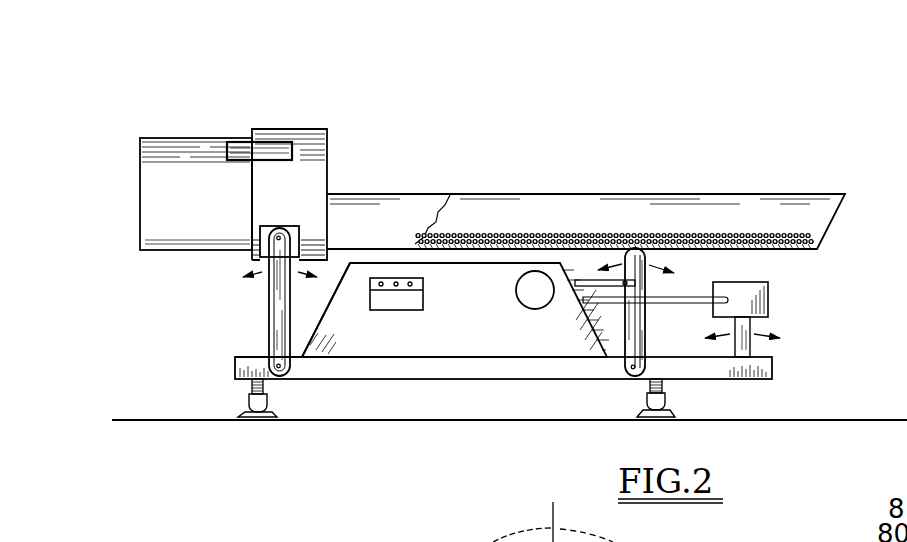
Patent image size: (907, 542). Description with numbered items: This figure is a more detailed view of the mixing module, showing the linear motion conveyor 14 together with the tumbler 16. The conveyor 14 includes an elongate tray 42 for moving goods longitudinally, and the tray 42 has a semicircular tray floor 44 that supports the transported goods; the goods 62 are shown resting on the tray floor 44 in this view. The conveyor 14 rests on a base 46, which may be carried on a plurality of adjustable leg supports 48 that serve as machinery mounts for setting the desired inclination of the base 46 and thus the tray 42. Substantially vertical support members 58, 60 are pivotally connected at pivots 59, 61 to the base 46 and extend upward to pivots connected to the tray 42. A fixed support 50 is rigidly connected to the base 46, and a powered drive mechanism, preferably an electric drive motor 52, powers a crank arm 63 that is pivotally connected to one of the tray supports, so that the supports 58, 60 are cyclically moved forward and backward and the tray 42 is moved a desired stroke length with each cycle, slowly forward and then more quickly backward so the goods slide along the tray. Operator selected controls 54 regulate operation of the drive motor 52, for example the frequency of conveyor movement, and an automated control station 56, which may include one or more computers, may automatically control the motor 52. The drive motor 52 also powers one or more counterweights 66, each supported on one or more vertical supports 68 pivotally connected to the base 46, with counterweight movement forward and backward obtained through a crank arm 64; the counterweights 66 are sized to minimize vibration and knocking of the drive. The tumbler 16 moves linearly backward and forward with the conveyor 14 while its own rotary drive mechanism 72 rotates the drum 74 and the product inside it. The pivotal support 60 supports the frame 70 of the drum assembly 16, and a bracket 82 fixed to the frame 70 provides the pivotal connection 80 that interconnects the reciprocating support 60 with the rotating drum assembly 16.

The linear motion conveyor 14 is at (592, 180).
The tumbler 16 is at (250, 156).
The elongate tray 42 is at (714, 190).
The semicircular tray floor 44 is at (793, 250).
The base 46 is at (473, 375).
The adjustable leg supports 48 is at (250, 402).
The fixed support 50 is at (455, 310).
The electric drive motor 52 is at (455, 282).
The operator selected controls 54 is at (337, 290).
The automated control station 56 is at (400, 312).
The vertical support member 58 is at (647, 327).
The pivotal connection 59 is at (620, 363).
The vertical support member 60 is at (282, 305).
The pivotal connection 61 is at (235, 360).
The material 62 is at (592, 232).
The crank arm 63 is at (578, 302).
The crank arm 64 is at (688, 298).
The counterweight 66 is at (770, 306).
The vertical support 68 is at (756, 347).
The frame 70 is at (297, 180).
The rotary drive mechanism 72 is at (295, 142).
The rotating drum 74 is at (210, 204).
The pivotal connection 80 is at (283, 235).
The bracket 82 is at (253, 248).